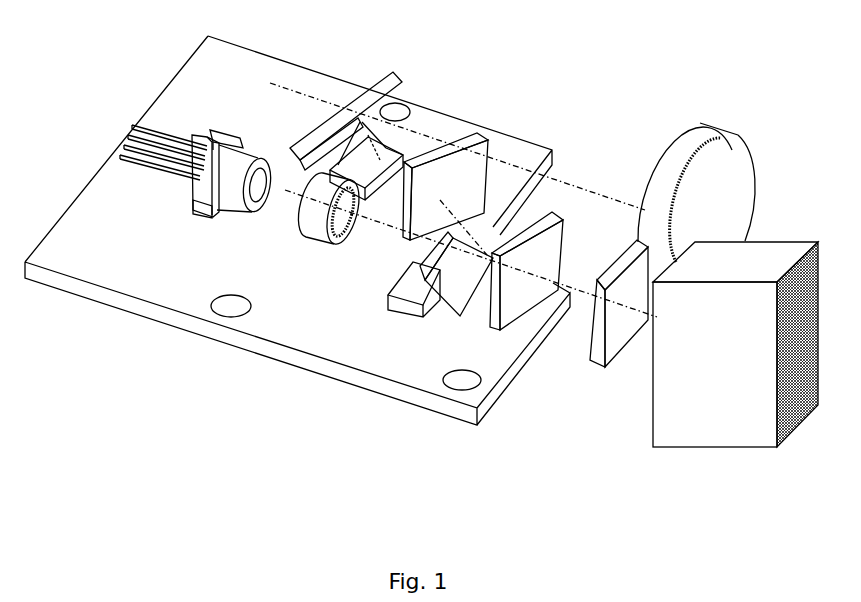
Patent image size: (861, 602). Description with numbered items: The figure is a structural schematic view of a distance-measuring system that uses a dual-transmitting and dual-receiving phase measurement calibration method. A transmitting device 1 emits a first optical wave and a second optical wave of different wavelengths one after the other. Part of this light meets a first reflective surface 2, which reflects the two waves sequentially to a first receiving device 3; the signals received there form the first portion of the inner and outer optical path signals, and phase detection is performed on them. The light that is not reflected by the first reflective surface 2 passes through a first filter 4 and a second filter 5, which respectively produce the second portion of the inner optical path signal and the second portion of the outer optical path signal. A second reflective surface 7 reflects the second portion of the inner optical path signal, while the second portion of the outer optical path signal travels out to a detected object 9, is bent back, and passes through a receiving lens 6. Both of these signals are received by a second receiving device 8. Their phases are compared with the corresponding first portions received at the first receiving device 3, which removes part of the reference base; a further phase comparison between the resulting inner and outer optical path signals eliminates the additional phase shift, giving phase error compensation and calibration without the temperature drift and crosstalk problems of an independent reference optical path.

The transmitting device 1 is at (230, 222).
The first reflective surface 2 is at (375, 297).
The first receiving device 3 is at (325, 305).
The first filter 4 is at (423, 308).
The second filter 5 is at (383, 177).
The receiving lens 6 is at (620, 148).
The second reflective surface 7 is at (268, 118).
The second receiving device 8 is at (300, 165).
The detected object 9 is at (682, 362).